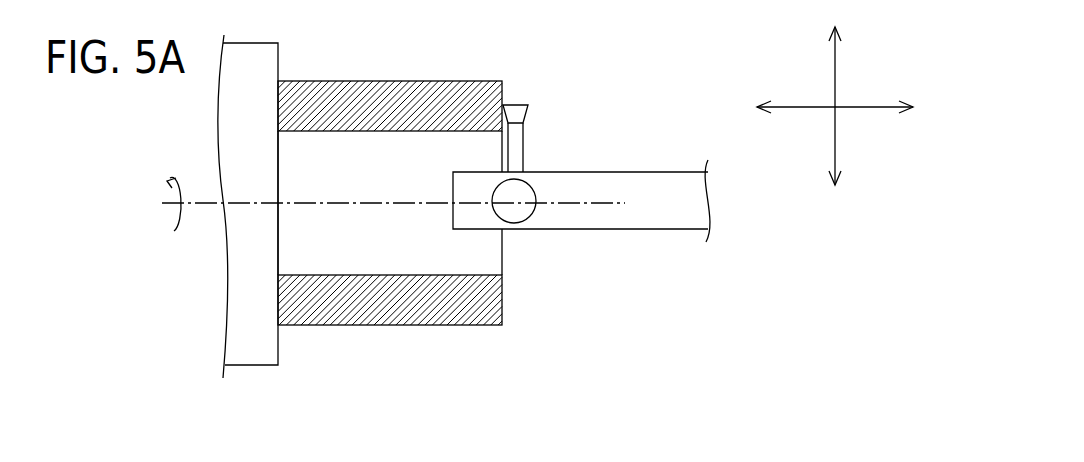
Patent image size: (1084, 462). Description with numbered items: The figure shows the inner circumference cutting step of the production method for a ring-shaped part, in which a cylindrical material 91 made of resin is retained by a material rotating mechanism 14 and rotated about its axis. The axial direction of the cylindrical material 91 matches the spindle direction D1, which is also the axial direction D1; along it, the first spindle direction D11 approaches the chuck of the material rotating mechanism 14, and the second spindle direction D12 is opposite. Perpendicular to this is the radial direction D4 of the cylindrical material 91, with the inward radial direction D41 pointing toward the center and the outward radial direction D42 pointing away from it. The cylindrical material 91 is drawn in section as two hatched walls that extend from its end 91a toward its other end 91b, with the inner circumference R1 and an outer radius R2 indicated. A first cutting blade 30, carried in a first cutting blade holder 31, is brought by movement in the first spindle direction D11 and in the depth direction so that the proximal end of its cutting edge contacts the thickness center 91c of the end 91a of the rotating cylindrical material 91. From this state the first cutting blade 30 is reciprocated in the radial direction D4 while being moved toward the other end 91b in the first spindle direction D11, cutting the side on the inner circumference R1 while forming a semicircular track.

The material rotating mechanism 14 is at (278, 62).
The first cutting blade 30 is at (523, 140).
The first cutting blade holder 31 is at (647, 172).
The cylindrical material 91 is at (413, 305).
The end 91a is at (502, 298).
The other end 91b is at (278, 300).
The thickness center 91c is at (512, 105).
The inner circumference R1 is at (412, 131).
The outer radius R2 is at (358, 81).
The spindle direction D1 is at (870, 108).
The first spindle direction D11 is at (739, 108).
The second spindle direction D12 is at (928, 108).
The radial direction D4 is at (835, 63).
The inward radial direction D41 is at (834, 191).
The outward radial direction D42 is at (834, 22).